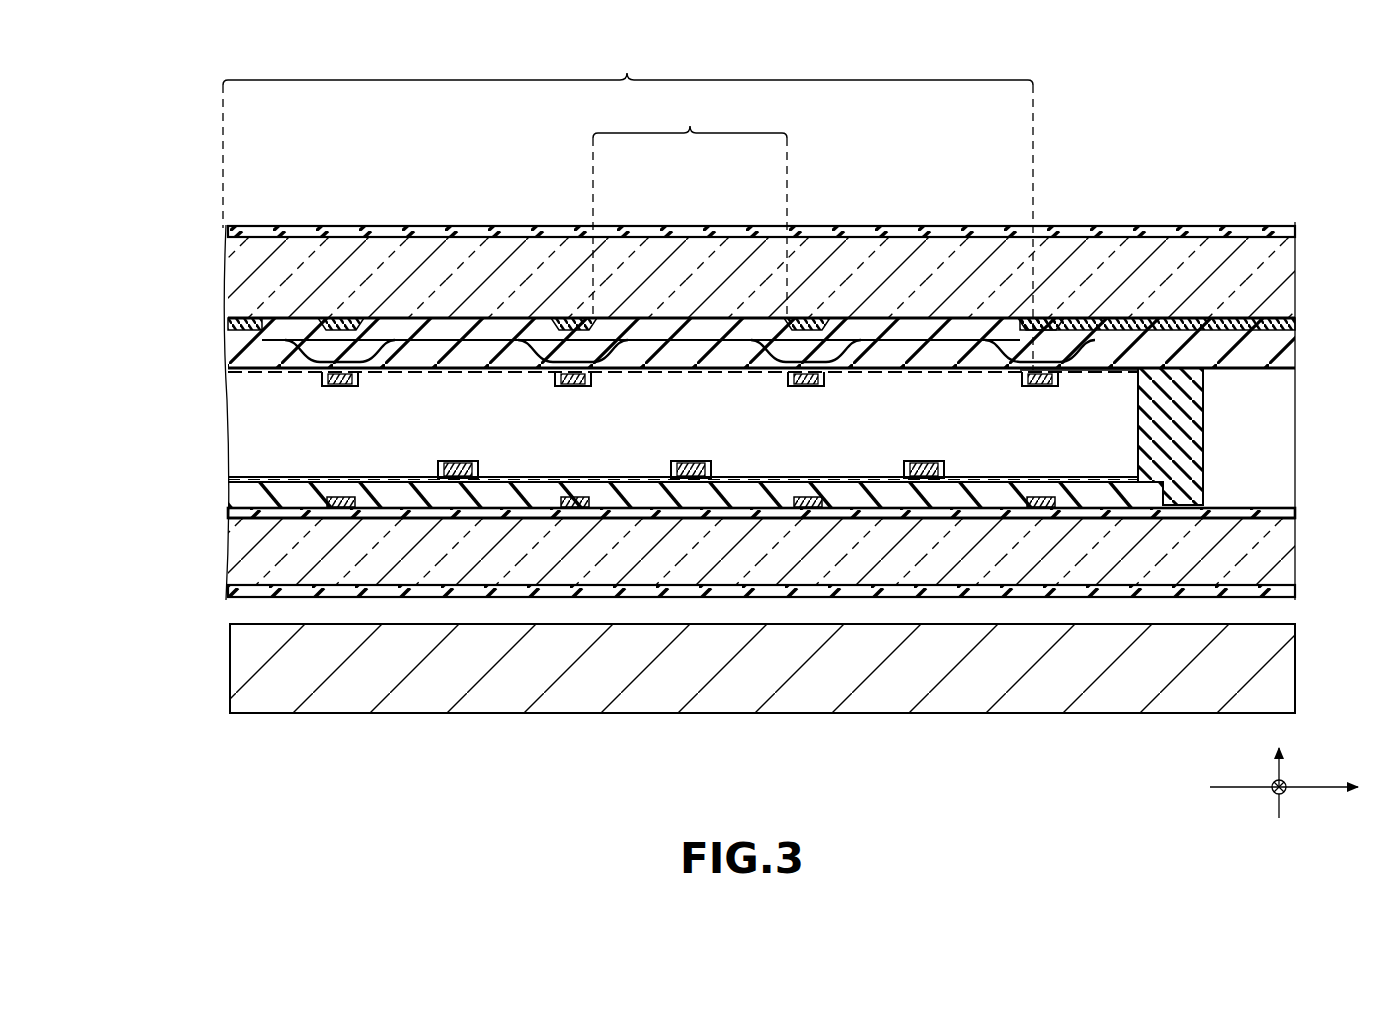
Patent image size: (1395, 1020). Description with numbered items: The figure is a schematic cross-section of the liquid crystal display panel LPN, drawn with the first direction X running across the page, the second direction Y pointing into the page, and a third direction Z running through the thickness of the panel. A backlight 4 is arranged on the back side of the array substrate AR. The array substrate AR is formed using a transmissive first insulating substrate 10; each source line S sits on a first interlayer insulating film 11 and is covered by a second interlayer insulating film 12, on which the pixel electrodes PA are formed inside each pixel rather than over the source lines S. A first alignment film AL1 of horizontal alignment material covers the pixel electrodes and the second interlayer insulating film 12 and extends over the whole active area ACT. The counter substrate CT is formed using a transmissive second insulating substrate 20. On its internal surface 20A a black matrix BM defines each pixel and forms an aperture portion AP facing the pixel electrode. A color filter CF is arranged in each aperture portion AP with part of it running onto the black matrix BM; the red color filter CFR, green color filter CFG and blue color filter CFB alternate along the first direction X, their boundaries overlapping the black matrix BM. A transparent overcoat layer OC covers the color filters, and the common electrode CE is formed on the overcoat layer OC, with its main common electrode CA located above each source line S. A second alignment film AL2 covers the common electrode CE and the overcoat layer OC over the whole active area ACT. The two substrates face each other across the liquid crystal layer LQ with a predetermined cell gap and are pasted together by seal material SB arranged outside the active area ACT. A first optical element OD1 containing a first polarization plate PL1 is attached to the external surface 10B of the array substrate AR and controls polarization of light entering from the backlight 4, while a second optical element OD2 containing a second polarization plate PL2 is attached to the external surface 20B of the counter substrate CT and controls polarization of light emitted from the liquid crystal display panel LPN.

The active area ACT is at (628, 205).
The aperture portion AP is at (690, 208).
The external surface of the counter substrate 20B is at (260, 228).
The red color filter CFR is at (280, 335).
The green color filter CFG is at (458, 335).
The blue color filter CFB is at (692, 335).
The black matrix BM is at (333, 318).
The main common electrode CA is at (342, 372).
The common electrode CE is at (320, 379).
The color filter CF is at (233, 334).
The counter substrate CT is at (220, 291).
The second optical element OD2 is at (228, 233).
The second polarization plate PL2 is at (712, 250).
The second insulating substrate 20 is at (1288, 277).
The internal surface of the second insulating substrate 20A is at (255, 350).
The liquid crystal display panel LPN is at (1300, 247).
The overcoat layer OC is at (1290, 356).
The second alignment film AL2 is at (1145, 374).
The seal material SB is at (1196, 420).
The first alignment film AL1 is at (1170, 472).
The second interlayer insulating film 12 is at (1075, 488).
The first interlayer insulating film 11 is at (1290, 510).
The first insulating substrate 10 is at (1290, 551).
The liquid crystal layer LQ is at (226, 470).
The array substrate AR is at (220, 554).
The first optical element OD1 is at (228, 592).
The first polarization plate PL1 is at (262, 600).
The external surface of the array substrate 10B is at (230, 627).
The backlight 4 is at (240, 678).
The source line S is at (341, 508).
The pixel electrode (detection electrode) PA is at (458, 478).
The first direction X is at (1296, 788).
The second direction Y is at (1271, 799).
The Z direction Z is at (1279, 752).